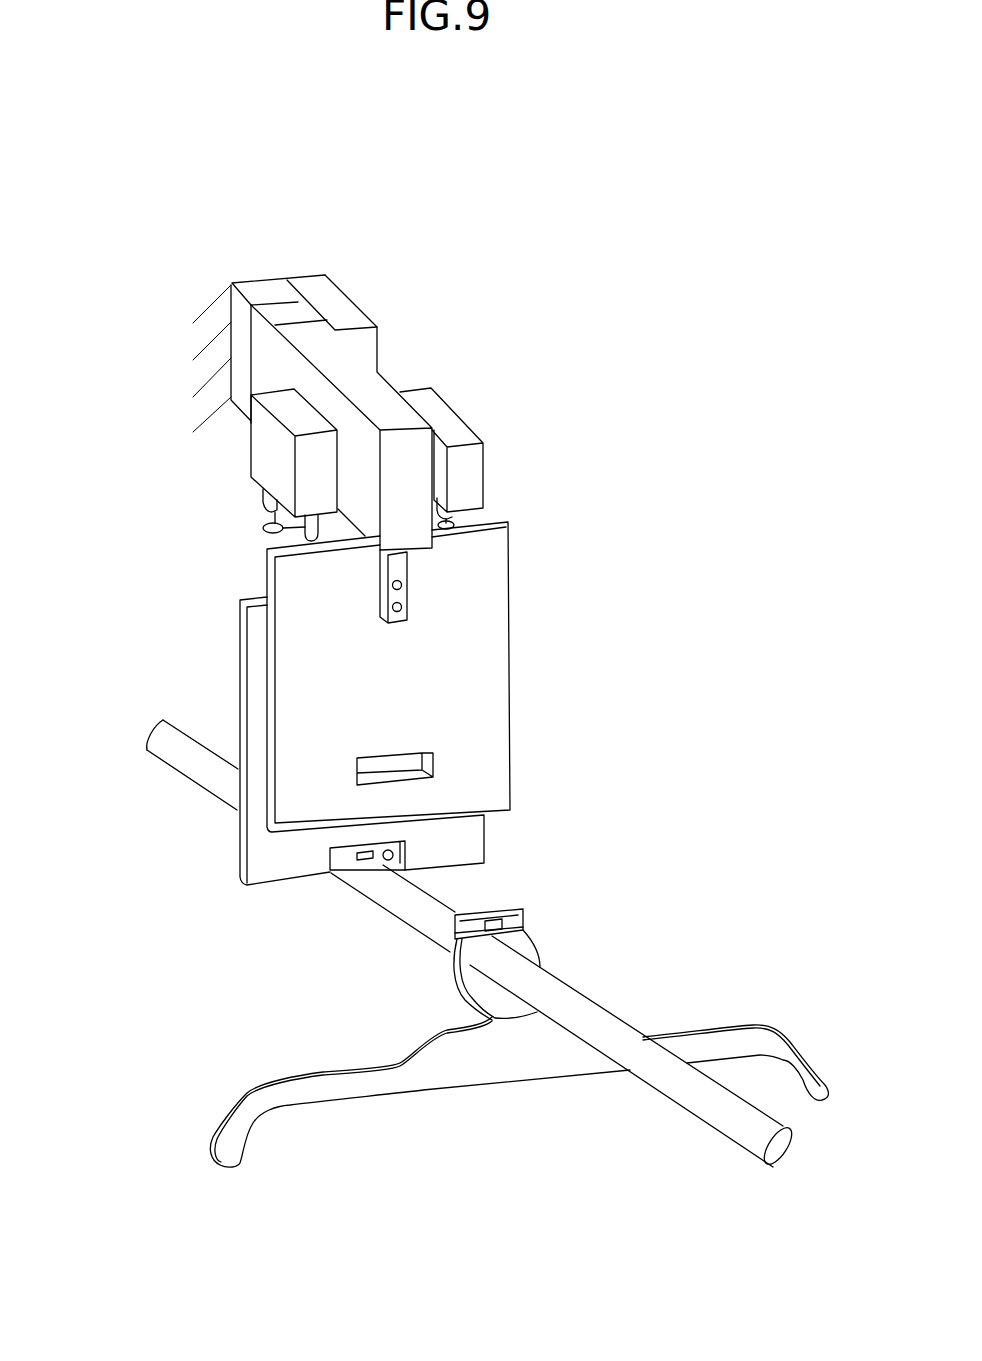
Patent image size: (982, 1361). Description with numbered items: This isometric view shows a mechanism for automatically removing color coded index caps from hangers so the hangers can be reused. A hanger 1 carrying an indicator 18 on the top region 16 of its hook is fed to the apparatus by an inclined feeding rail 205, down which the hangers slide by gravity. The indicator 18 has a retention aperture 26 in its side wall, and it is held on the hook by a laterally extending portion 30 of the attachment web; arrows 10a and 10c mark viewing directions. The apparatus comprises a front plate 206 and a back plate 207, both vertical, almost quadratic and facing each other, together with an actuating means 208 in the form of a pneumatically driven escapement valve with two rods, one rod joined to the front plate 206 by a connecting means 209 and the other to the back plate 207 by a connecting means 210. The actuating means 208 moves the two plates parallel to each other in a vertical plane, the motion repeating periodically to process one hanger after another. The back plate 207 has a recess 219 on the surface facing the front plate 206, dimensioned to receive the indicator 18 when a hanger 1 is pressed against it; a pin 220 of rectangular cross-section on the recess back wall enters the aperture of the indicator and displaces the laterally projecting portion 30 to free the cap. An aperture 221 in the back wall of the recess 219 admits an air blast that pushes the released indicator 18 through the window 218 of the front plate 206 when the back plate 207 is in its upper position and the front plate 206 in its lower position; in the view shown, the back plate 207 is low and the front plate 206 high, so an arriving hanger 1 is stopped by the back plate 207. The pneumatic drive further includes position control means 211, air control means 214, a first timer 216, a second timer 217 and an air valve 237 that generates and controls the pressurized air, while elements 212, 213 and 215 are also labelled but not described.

The hanger 1 is at (520, 1062).
The direction 10a is at (319, 260).
The direction 10c is at (463, 357).
The top region 16 is at (533, 940).
The indicator 18 is at (527, 923).
The retention aperture 26 is at (520, 910).
The laterally extending portion 30 is at (480, 923).
The feeding rail 205 is at (357, 898).
The front plate 206 is at (498, 608).
The back plate 207 is at (255, 803).
The actuating means 208 is at (378, 388).
The connecting means 209 is at (407, 600).
The connecting means 210 is at (370, 547).
The position control means 211 is at (263, 455).
The disc 212 is at (262, 527).
The pin 213 is at (268, 497).
The air control means 214 is at (475, 470).
The pin 215 is at (450, 518).
The first timer 216 is at (287, 313).
The second timer 217 is at (235, 313).
The window 218 is at (420, 753).
The recess 219 is at (330, 863).
The pin 220 is at (273, 819).
The aperture 221 is at (407, 850).
The air valve 237 is at (333, 303).